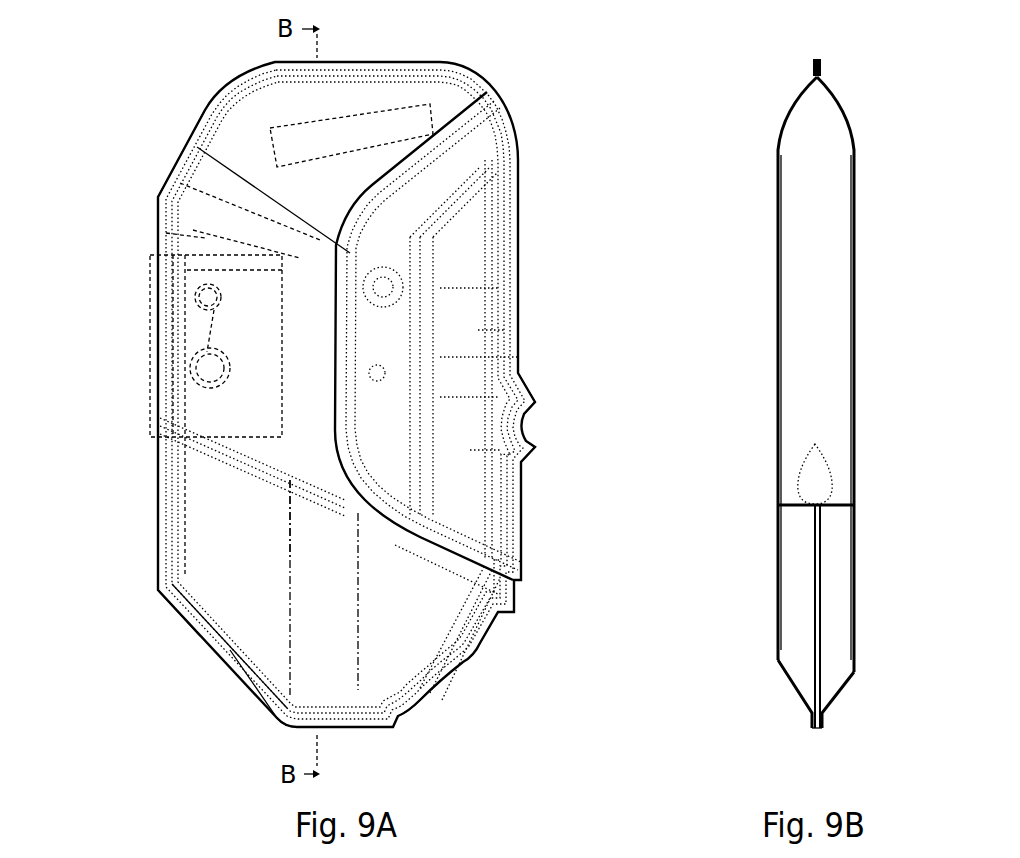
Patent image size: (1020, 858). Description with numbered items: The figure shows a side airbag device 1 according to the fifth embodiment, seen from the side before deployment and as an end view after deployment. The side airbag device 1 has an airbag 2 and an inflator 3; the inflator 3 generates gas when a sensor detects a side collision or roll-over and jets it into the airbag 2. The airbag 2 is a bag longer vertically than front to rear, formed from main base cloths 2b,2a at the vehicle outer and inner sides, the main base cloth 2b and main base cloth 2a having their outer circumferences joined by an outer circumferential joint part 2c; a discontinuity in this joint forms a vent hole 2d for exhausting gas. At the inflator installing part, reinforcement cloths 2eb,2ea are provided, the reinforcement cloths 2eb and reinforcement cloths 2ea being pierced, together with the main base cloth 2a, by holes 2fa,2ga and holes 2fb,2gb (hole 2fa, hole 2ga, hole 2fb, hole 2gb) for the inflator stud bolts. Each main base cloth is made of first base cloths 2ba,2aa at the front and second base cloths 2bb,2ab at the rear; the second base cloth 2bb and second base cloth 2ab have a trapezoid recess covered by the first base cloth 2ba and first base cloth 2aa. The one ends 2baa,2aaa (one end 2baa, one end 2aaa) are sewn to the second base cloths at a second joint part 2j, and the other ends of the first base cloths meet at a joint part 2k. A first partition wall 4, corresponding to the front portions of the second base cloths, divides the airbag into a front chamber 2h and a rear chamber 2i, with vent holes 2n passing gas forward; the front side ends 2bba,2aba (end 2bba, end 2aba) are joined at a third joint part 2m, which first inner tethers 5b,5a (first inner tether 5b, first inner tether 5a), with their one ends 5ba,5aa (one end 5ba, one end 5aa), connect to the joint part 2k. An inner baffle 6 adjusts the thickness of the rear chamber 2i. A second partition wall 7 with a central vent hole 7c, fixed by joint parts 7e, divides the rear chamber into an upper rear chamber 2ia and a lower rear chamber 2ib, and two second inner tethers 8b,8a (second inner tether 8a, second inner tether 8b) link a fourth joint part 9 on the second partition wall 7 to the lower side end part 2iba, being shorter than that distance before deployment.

In FIG. 9A, the side airbag device 1 is at (517, 86).
In FIG. 9B, the side airbag device 1 is at (876, 103).
In FIG. 9A, the airbag 2 is at (528, 142).
In FIG. 9B, the airbag 2 is at (858, 306).
In FIG. 9A, the main base cloth 2a is at (190, 640).
In FIG. 9B, the main base cloth 2a is at (778, 632).
In FIG. 9A, the main base cloth 2b is at (141, 637).
In FIG. 9B, the main base cloth 2b is at (857, 630).
In FIG. 9A, the outer circumferential joint part 2c is at (414, 62).
In FIG. 9B, the outer circumferential joint part 2c is at (812, 64).
In FIG. 9A, the vent hole 2d is at (540, 421).
In FIG. 9A, the front chamber 2h is at (538, 468).
In FIG. 9A, the rear chamber 2i is at (245, 578).
In FIG. 9B, the rear chamber 2i is at (697, 366).
In FIG. 9A, the upper rear chamber 2ia is at (240, 100).
In FIG. 9B, the upper rear chamber 2ia is at (776, 378).
In FIG. 9A, the lower rear chamber 2ib is at (235, 690).
In FIG. 9B, the lower rear chamber 2ib is at (800, 602).
In FIG. 9A, the lower side end part 2iba is at (338, 728).
In FIG. 9B, the lower side end part 2iba is at (818, 733).
In FIG. 9A, the second joint part 2j is at (362, 322).
In FIG. 9A, the joint part 2k is at (521, 247).
In FIG. 9A, the third joint part 2m is at (343, 468).
In FIG. 9A, the vent holes 2n is at (378, 383).
In FIG. 9A, the first base cloths 2ba,2aa is at (579, 556).
In FIG. 9A, the first base cloth 2ba is at (579, 556).
In FIG. 9A, the first base cloth 2aa is at (524, 548).
In FIG. 9A, the second base cloths 2bb,2ab is at (478, 702).
In FIG. 9A, the second base cloth 2bb is at (478, 702).
In FIG. 9A, the second base cloth 2ab is at (428, 690).
In FIG. 9A, the main base cloths 2b,2a is at (141, 637).
In FIG. 9A, the one ends of the first base cloths 2baa,2aaa is at (186, 189).
In FIG. 9A, the one end of the first base cloth 2baa is at (186, 189).
In FIG. 9A, the one end of the first base cloth 2aaa is at (200, 150).
In FIG. 9A, the front side ends of the second base cloths 2bba,2aba is at (548, 360).
In FIG. 9A, the front side end of the second base cloth 2bba is at (548, 360).
In FIG. 9A, the front side end of the second base cloth 2aba is at (525, 372).
In FIG. 9A, the reinforcement cloths 2eb,2ea is at (158, 241).
In FIG. 9A, the reinforcement cloths 2eb is at (158, 241).
In FIG. 9A, the reinforcement cloths 2ea is at (165, 232).
In FIG. 9A, the holes 2fa,2ga is at (152, 346).
In FIG. 9A, the hole 2fa is at (152, 346).
In FIG. 9A, the hole 2ga is at (150, 287).
In FIG. 9A, the holes 2fb,2gb is at (101, 415).
In FIG. 9A, the hole 2fb is at (101, 415).
In FIG. 9A, the hole 2gb is at (165, 395).
In FIG. 9A, the inflator 3 is at (160, 455).
In FIG. 9A, the first partition wall 4 is at (455, 565).
In FIG. 9A, the first inner tethers 5b,5a is at (495, 298).
In FIG. 9A, the first inner tether 5b is at (495, 298).
In FIG. 9A, the first inner tether 5a is at (520, 322).
In FIG. 9A, the one ends of the first inner tethers 5ba,5aa is at (181, 210).
In FIG. 9A, the one end of the first inner tether 5ba is at (181, 210).
In FIG. 9A, the one end of the first inner tether 5aa is at (176, 182).
In FIG. 9A, the inner baffle 6 is at (363, 130).
In FIG. 9A, the second partition wall 7 is at (327, 453).
In FIG. 9B, the second partition wall 7 is at (840, 497).
In FIG. 9A, the vent hole 7c is at (292, 492).
In FIG. 9A, the joint parts 7e is at (425, 540).
In FIG. 9B, the joint parts 7e is at (778, 506).
In FIG. 9A, the second inner tethers 8b,8a is at (232, 710).
In FIG. 9A, the second inner tether 8a is at (265, 712).
In FIG. 9B, the second inner tether 8a is at (813, 660).
In FIG. 9A, the second inner tether 8b is at (232, 710).
In FIG. 9B, the second inner tether 8b is at (822, 585).
In FIG. 9B, the fourth joint part 9 is at (815, 447).